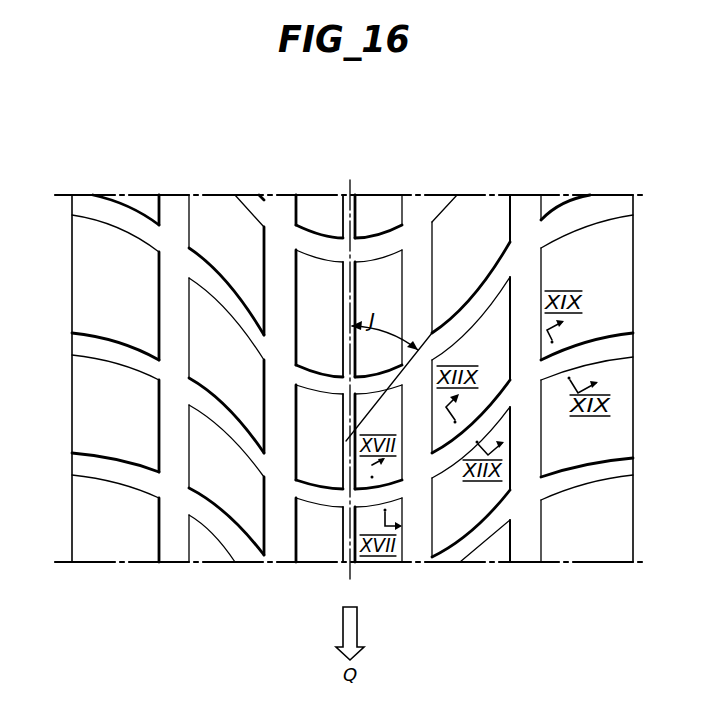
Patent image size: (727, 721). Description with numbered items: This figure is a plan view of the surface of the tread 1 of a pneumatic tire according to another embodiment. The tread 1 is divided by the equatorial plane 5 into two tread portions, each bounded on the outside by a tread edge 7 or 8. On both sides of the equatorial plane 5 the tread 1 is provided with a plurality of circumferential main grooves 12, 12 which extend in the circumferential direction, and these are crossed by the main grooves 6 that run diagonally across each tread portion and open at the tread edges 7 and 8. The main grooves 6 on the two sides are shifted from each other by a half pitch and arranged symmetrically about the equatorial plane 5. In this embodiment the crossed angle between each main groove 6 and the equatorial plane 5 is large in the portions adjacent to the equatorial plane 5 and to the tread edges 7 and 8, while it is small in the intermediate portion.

The tread 1 is at (553, 200).
The equatorial plane 5 is at (351, 184).
The main groove 6 is at (208, 278).
The tread edge 7 is at (80, 386).
The tread edge 8 is at (634, 405).
The circumferential main groove 12 is at (172, 213).